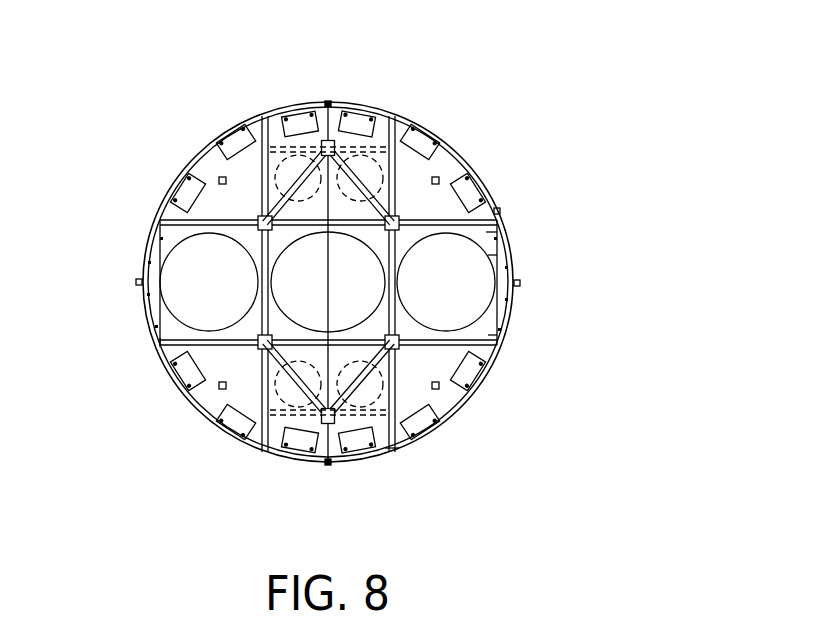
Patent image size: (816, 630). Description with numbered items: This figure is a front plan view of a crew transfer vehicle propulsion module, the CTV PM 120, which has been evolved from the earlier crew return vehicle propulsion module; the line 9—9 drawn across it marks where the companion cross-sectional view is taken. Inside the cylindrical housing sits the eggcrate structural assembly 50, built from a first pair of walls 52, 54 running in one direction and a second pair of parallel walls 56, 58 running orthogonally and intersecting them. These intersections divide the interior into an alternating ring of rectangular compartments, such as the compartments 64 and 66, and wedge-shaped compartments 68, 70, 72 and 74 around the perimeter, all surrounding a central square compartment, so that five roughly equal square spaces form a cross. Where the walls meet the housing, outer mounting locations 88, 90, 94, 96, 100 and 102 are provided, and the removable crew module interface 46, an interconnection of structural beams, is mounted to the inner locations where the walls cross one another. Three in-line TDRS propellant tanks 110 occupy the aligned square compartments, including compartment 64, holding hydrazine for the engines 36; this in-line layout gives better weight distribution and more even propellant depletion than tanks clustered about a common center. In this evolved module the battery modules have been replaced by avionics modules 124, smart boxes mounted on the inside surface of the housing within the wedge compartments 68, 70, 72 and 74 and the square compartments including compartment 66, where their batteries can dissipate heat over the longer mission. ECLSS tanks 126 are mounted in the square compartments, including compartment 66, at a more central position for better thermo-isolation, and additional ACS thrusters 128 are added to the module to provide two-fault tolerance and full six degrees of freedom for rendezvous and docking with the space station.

The CTV PM 120 is at (507, 63).
The ECLSS tanks 126 is at (285, 107).
The engines 36 is at (363, 104).
The rectangular-shaped compartment 66 is at (390, 113).
The outer mounting location 96 is at (408, 118).
The avionics modules 124 is at (199, 166).
The crew module interface 46 is at (410, 204).
The wedge shaped compartment 72 is at (502, 203).
The eggcrate structural assembly 50 is at (512, 214).
The outer mounting location 94 is at (488, 232).
The rectangular-shaped compartment 64 is at (488, 255).
The wall 54 is at (392, 243).
The propellant tanks 110 is at (162, 300).
The outer mounting location 102 is at (160, 346).
The wall 56 is at (150, 239).
The outer mounting location 100 is at (162, 220).
The wall 52 is at (172, 200).
The wedge shaped compartment 74 is at (198, 180).
The wall 58 is at (218, 348).
The wedge shaped compartment 68 is at (212, 403).
The outer mounting location 88 is at (267, 452).
The outer mounting location 90 is at (387, 450).
The additional ACS thrusters 128 is at (330, 465).
The wedge shaped compartment 70 is at (463, 402).
The section line 9— 9 is at (328, 103).